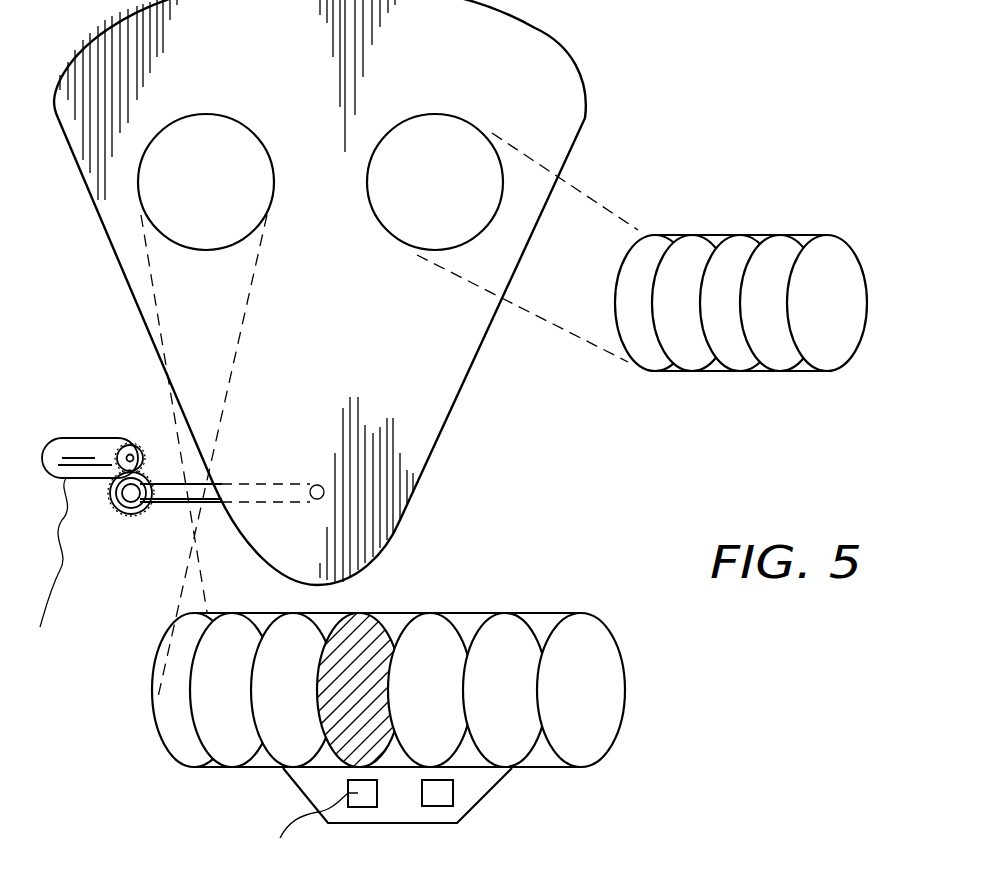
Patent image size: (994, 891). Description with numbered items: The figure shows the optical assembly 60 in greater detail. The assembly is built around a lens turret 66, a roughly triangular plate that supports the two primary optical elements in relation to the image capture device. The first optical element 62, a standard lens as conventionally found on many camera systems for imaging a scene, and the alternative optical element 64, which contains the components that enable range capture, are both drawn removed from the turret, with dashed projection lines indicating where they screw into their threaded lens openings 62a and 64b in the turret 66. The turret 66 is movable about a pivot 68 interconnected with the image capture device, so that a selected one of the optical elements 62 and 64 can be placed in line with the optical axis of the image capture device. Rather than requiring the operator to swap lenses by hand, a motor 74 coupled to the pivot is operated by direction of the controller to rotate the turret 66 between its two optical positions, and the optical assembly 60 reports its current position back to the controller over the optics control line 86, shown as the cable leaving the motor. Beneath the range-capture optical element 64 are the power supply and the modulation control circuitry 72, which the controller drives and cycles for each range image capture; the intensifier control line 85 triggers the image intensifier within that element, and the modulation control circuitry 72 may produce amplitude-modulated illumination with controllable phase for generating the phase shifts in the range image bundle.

The optical assembly 60 is at (380, 292).
The first optical element 62 is at (732, 372).
The threaded lens opening 62a is at (436, 114).
The alternative optical element 64 is at (550, 613).
The threaded lens opening 64b is at (208, 114).
The lens turret 66 is at (440, 352).
The pivot 68 is at (317, 486).
The modulation control circuitry 72 is at (438, 790).
The motor 74 is at (82, 438).
The intensifier control line 85 is at (292, 779).
The optics control line 86 is at (62, 560).